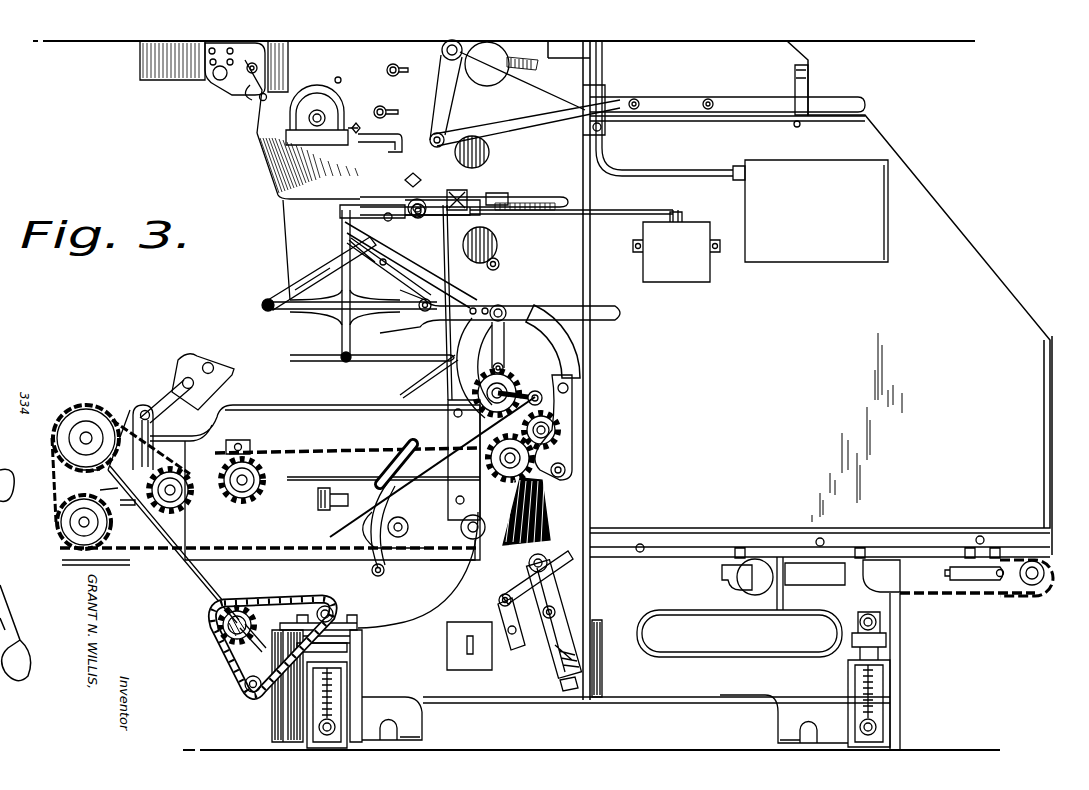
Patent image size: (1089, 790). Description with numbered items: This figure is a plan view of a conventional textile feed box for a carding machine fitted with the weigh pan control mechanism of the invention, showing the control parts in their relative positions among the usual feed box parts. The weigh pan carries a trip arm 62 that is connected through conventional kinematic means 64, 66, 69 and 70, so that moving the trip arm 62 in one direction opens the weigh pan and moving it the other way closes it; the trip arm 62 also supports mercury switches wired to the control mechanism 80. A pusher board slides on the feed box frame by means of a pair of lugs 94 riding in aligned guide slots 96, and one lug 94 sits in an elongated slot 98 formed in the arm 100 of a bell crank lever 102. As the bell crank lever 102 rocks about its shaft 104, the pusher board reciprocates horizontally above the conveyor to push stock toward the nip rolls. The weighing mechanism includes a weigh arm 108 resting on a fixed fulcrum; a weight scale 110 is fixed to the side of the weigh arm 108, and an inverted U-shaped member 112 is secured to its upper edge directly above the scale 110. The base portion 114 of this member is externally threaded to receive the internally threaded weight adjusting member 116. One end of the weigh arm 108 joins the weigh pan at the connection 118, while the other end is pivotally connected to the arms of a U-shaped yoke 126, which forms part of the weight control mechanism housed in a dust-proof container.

The trip arm 62 is at (482, 297).
The kinematic means 64 is at (392, 365).
The kinematic means 66 is at (340, 328).
The kinematic means 69 is at (389, 274).
The kinematic means 70 is at (266, 298).
The control mechanism 80 is at (816, 211).
The lugs 94 is at (270, 504).
The guide slots 96 is at (347, 464).
The elongated slot 98 is at (412, 444).
The arm 100 is at (398, 542).
The bell crank lever 102 is at (365, 548).
The shaft 104 is at (378, 574).
The weigh arm 108 is at (568, 216).
The weight scale 110 is at (527, 213).
The inverted U-shaped member 112 is at (582, 192).
The base portion 114 is at (525, 196).
The weight adjusting member 116 is at (508, 184).
The connection 118 is at (340, 212).
The U-shaped yoke 126 is at (699, 296).